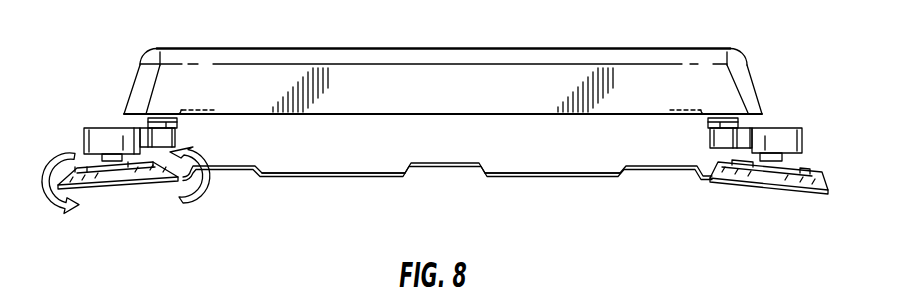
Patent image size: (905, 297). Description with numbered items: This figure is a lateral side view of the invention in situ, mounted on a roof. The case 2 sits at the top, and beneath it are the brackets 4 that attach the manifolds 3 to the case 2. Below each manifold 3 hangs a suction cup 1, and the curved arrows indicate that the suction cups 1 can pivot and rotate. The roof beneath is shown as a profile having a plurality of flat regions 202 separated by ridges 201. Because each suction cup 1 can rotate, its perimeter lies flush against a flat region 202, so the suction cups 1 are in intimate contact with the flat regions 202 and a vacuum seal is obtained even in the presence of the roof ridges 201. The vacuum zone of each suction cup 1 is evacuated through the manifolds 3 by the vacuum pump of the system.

The suction cup 1 is at (92, 182).
The case 2 is at (238, 76).
The manifold 3 is at (102, 131).
The bracket 4 is at (178, 123).
The ridge 201 is at (240, 169).
The flat region 202 is at (338, 174).